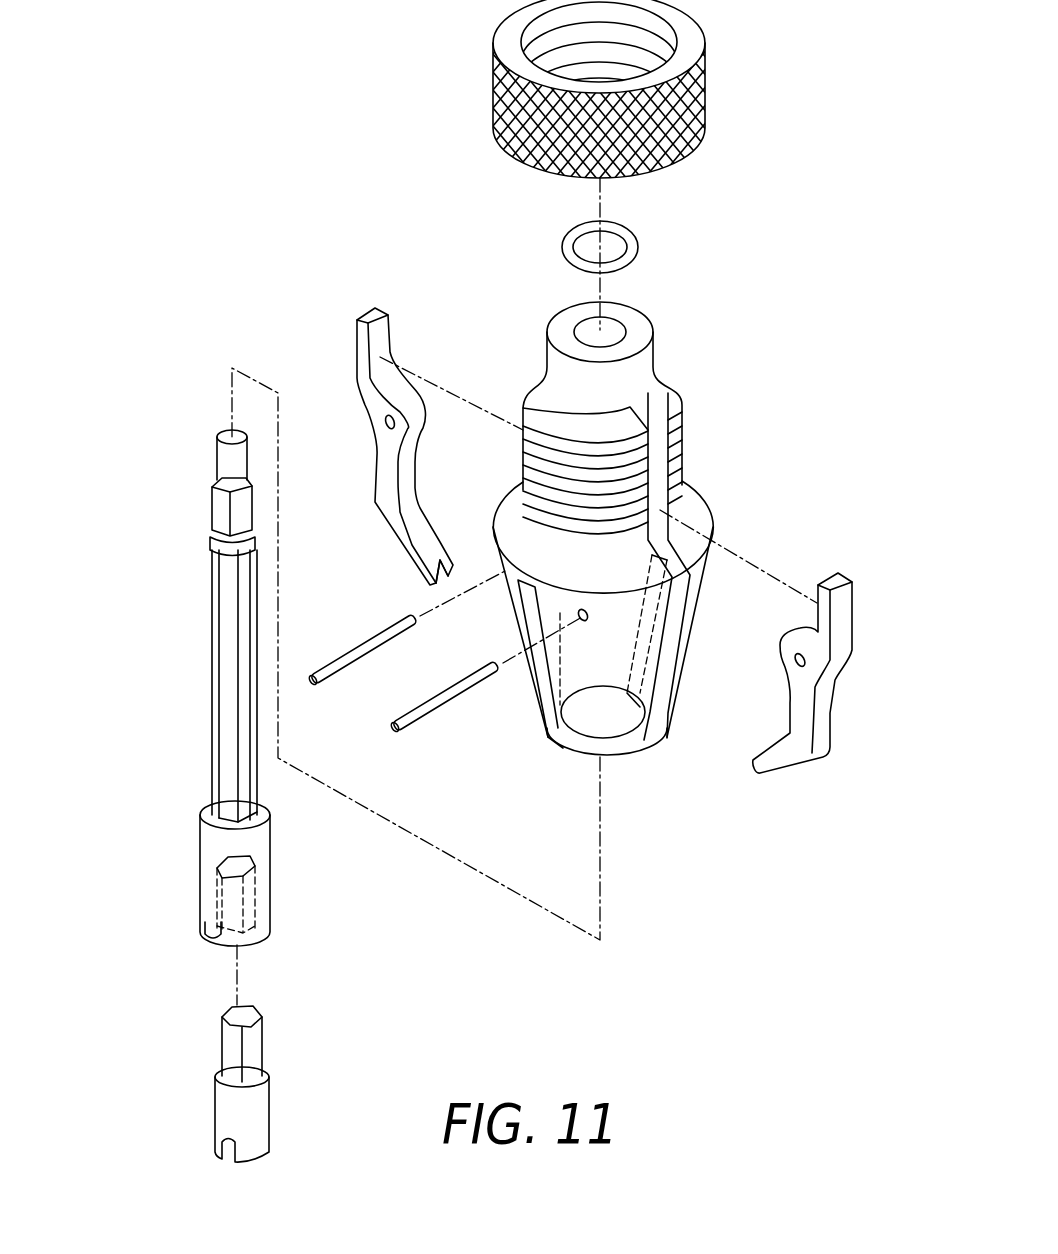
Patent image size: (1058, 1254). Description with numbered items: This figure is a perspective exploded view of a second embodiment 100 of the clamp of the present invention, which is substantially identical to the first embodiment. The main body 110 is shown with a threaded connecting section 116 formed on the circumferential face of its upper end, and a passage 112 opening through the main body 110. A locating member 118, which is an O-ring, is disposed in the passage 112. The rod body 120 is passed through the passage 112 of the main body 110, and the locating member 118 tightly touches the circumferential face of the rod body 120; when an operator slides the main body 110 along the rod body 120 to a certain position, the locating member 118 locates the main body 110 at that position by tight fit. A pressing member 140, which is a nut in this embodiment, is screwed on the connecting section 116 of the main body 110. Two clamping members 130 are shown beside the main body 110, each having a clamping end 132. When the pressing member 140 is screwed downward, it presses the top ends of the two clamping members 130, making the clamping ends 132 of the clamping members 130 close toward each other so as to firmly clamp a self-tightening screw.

The clamp 100 is at (728, 166).
The main body 110 is at (658, 515).
The passage 112 is at (612, 328).
The threaded connecting section 116 is at (675, 471).
The locating member 118 is at (636, 243).
The rod body 120 is at (202, 652).
The clamping member 130 is at (607, 505).
The clamping end 132 is at (398, 518).
The pressing member 140 is at (480, 52).